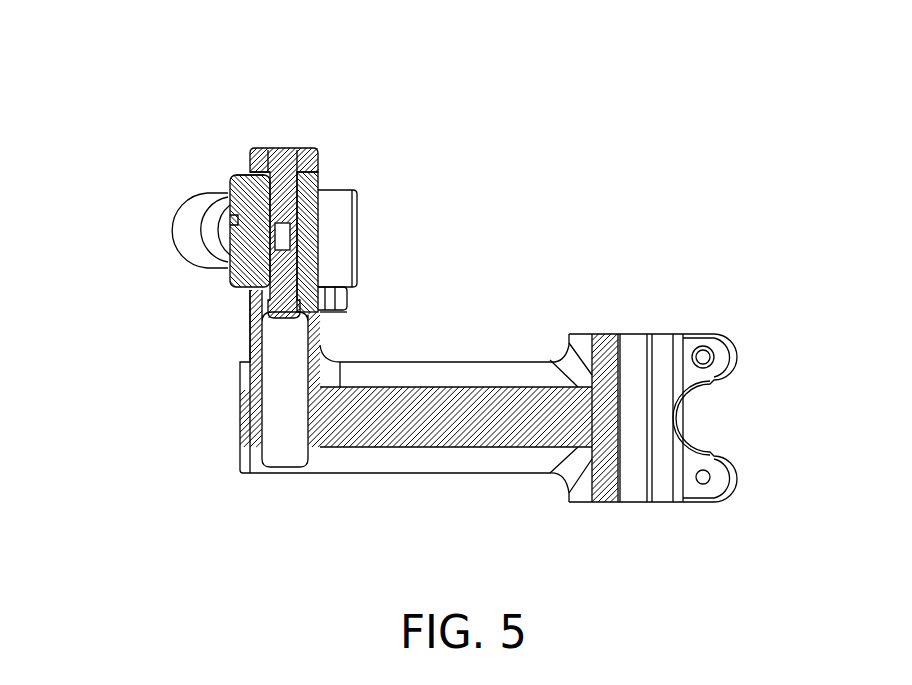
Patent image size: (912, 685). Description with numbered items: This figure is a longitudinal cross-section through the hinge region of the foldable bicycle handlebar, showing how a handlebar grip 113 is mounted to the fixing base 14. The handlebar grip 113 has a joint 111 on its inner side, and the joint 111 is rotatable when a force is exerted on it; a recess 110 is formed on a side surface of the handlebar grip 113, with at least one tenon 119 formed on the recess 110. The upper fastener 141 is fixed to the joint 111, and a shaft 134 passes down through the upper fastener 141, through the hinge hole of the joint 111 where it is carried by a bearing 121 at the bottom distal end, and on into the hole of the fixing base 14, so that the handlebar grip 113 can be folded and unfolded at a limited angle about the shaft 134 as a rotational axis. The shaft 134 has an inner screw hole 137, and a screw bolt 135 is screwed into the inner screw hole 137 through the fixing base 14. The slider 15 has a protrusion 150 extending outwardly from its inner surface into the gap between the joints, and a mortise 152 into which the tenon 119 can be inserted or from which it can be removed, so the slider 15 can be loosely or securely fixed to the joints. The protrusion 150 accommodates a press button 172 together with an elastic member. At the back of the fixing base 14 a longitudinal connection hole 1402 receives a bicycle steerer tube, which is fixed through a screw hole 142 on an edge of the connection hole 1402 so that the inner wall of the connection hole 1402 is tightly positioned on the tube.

The fixing base 14 is at (438, 377).
The connection hole 1402 is at (638, 360).
The screw hole 142 is at (818, 484).
The slider 15 is at (232, 284).
The tenon 119 is at (232, 180).
The mortise 152 is at (230, 231).
The handlebar grip 113 is at (182, 222).
The joint 111 is at (263, 148).
The upper fastener 141 is at (255, 150).
The shaft 134 is at (293, 148).
The bearing 121 is at (258, 302).
The protrusion 150 is at (347, 220).
The inner screw hole 137 is at (305, 252).
The press button 172 is at (343, 298).
The screw bolt 135 is at (321, 318).
The recess 110 is at (250, 290).